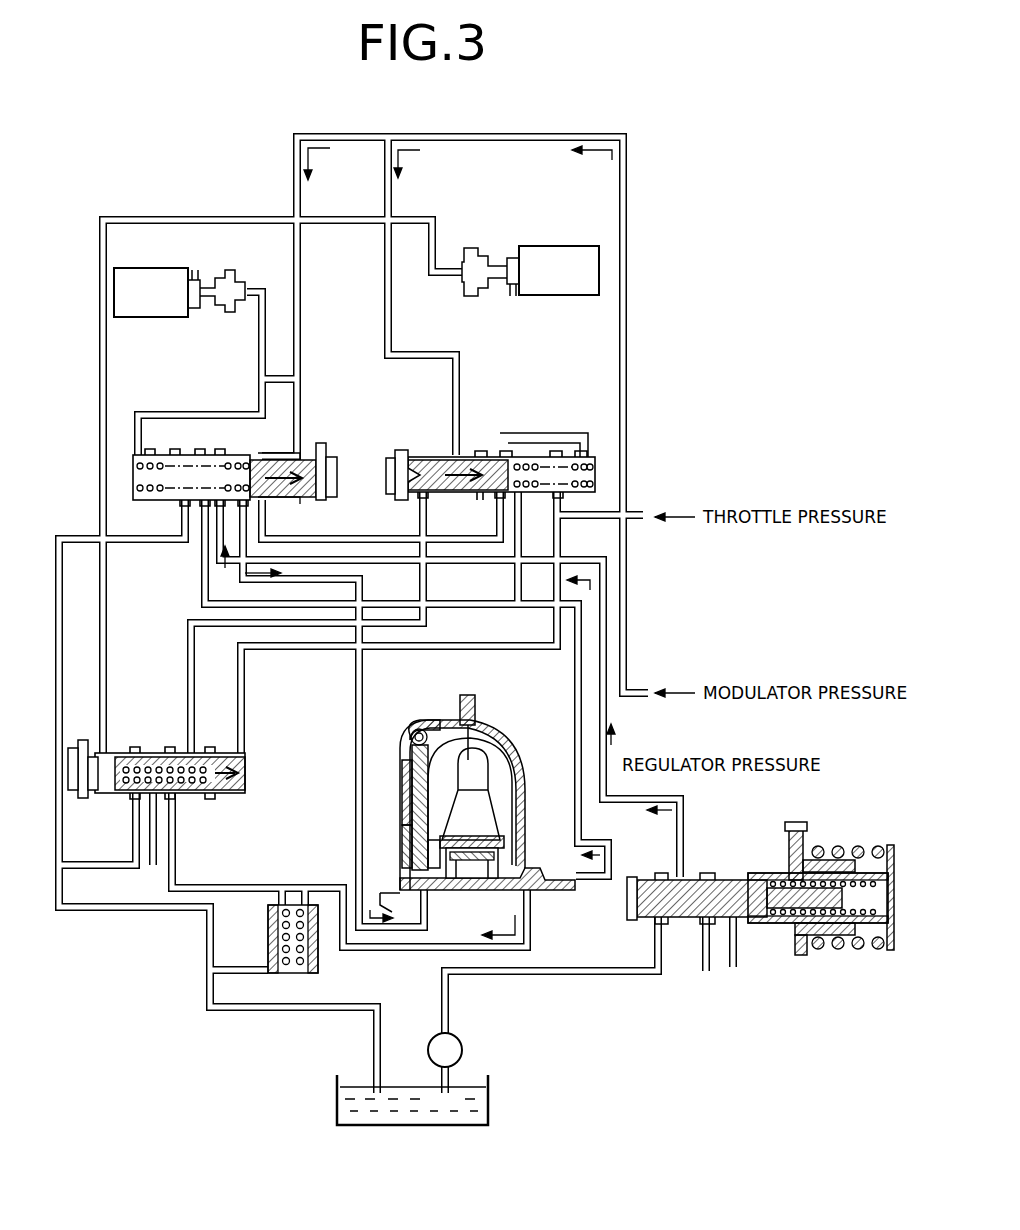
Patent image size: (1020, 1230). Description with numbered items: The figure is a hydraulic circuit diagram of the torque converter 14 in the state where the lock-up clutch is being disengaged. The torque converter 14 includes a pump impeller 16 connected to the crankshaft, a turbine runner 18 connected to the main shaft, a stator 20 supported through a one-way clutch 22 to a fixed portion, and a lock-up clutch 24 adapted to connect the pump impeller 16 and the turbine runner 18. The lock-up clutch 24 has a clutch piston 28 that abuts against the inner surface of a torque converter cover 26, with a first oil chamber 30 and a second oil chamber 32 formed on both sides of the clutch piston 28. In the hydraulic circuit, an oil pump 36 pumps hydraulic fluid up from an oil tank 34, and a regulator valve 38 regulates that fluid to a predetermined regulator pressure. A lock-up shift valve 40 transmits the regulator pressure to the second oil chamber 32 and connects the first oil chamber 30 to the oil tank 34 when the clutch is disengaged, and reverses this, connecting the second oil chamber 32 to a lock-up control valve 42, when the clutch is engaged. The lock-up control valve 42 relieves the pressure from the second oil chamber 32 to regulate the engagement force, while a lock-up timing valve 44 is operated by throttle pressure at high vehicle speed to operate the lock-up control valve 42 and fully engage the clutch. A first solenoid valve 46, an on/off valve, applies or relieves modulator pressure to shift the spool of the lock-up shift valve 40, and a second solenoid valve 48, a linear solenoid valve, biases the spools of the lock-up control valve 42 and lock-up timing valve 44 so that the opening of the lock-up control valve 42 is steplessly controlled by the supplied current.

The torque converter 14 is at (444, 791).
The pump impeller 16 is at (512, 770).
The turbine runner 18 is at (452, 722).
The stator 20 is at (482, 808).
The one-way clutch 22 is at (484, 884).
The lock-up clutch 24 is at (416, 722).
The torque converter cover 26 is at (405, 810).
The clutch piston 28 is at (414, 750).
The first oil chamber 30 is at (418, 828).
The second oil chamber 32 is at (408, 778).
The oil tank 34 is at (488, 1100).
The oil pump 36 is at (463, 1050).
The regulator valve 38 is at (830, 836).
The lock-up shift valve 40 is at (193, 440).
The lock-up control valve 42 is at (480, 436).
The lock-up timing valve 44 is at (134, 740).
The first solenoid valve 46 is at (160, 268).
The second solenoid valve 48 is at (545, 244).